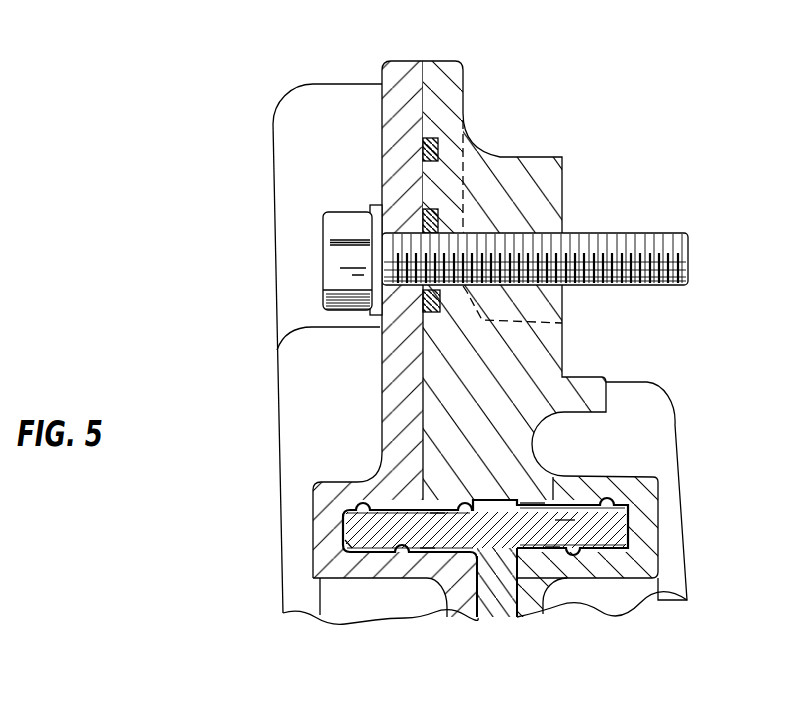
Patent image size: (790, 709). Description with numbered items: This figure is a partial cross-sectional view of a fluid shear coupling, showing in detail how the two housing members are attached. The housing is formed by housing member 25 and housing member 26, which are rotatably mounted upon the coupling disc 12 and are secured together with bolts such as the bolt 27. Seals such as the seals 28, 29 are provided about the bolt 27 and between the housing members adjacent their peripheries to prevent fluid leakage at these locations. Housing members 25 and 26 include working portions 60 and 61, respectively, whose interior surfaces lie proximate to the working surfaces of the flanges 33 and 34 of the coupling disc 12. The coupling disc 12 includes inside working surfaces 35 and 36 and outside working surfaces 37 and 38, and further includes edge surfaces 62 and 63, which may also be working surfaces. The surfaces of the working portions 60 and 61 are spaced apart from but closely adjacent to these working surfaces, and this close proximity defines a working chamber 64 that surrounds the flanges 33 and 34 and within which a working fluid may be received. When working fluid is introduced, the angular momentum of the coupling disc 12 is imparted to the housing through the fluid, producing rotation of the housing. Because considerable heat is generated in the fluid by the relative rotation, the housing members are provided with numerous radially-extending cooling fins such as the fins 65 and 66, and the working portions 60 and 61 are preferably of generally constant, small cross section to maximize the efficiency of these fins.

The coupling disc 12 is at (477, 592).
The housing member 25 is at (388, 105).
The housing member 26 is at (450, 90).
The bolt 27 is at (335, 258).
The seal 28 is at (437, 225).
The seal 29 is at (433, 148).
The flange 33 is at (392, 525).
The flange 34 is at (563, 517).
The inside working surface 35 is at (427, 552).
The inside working surface 36 is at (553, 548).
The outside working surface 37 is at (437, 510).
The outside working surface 38 is at (532, 495).
The working portion 60 is at (358, 572).
The working portion 61 is at (627, 483).
The edge surface 62 is at (345, 545).
The edge surface 63 is at (628, 524).
The working chamber 64 is at (345, 528).
The cooling fin 65 is at (287, 175).
The cooling fin 66 is at (636, 400).